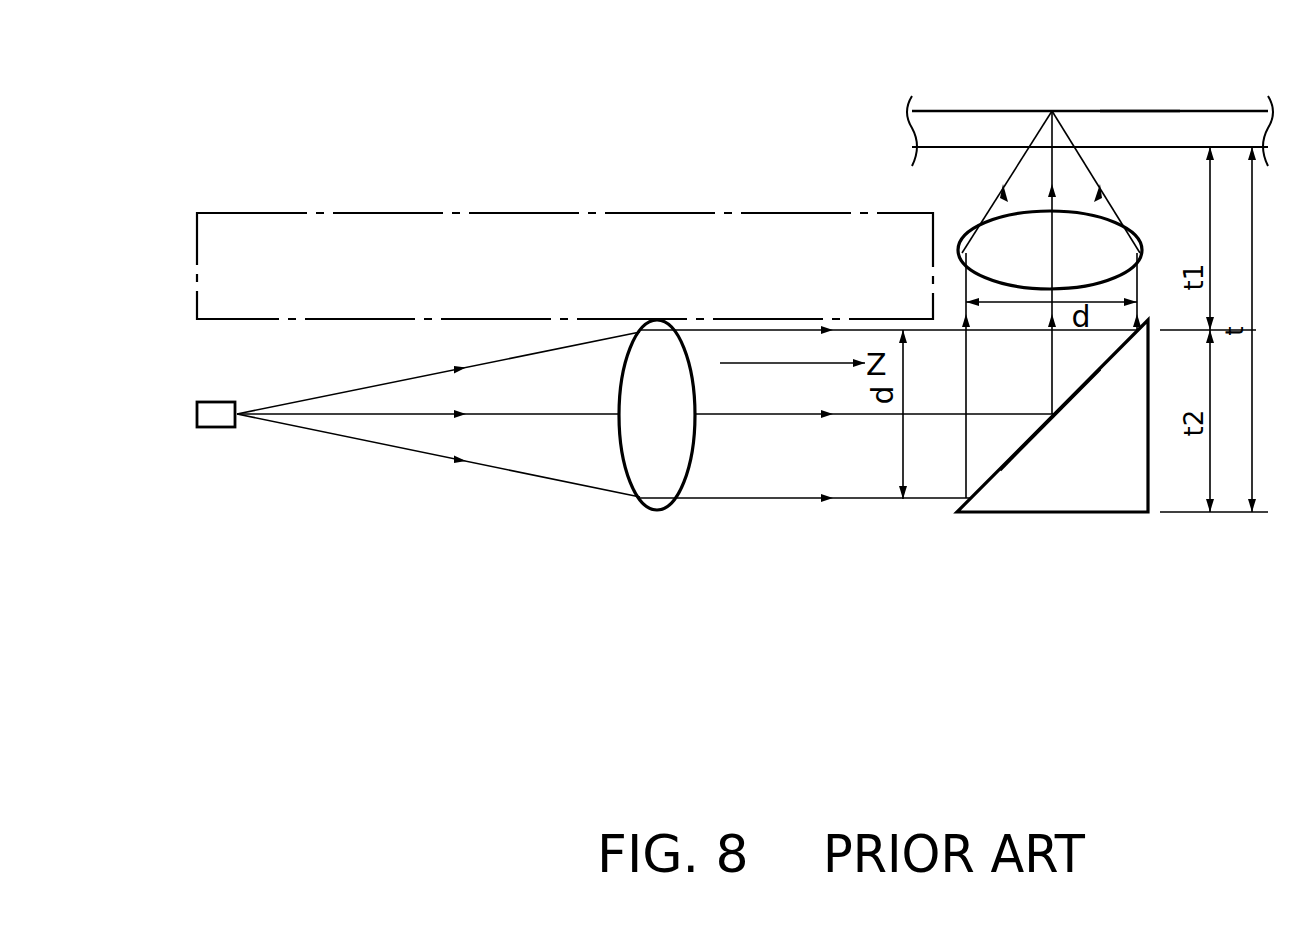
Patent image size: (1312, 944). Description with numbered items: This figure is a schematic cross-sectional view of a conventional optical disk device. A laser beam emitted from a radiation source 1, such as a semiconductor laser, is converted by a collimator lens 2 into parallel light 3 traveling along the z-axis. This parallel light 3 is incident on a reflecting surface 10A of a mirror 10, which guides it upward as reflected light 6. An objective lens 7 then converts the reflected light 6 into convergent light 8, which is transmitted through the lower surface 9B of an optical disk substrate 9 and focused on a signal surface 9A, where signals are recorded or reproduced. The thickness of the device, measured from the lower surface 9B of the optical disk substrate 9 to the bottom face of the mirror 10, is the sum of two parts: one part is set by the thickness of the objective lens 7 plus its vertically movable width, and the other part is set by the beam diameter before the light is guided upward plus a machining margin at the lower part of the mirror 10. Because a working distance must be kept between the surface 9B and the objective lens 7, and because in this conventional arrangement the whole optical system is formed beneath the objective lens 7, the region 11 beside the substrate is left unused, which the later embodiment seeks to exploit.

The radiation source 1 is at (212, 427).
The collimator lens 2 is at (655, 510).
The parallel light 3 is at (790, 415).
The reflected light 6 is at (1052, 366).
The objective lens 7 is at (1142, 252).
The convergent light 8 is at (1052, 212).
The optical disk substrate 9 is at (1189, 108).
The signal surface 9A is at (1143, 111).
The surface of optical disk substrate 9B is at (1160, 148).
The mirror 10 is at (1000, 518).
The reflecting surface 10A is at (1000, 466).
The region 11 is at (610, 213).